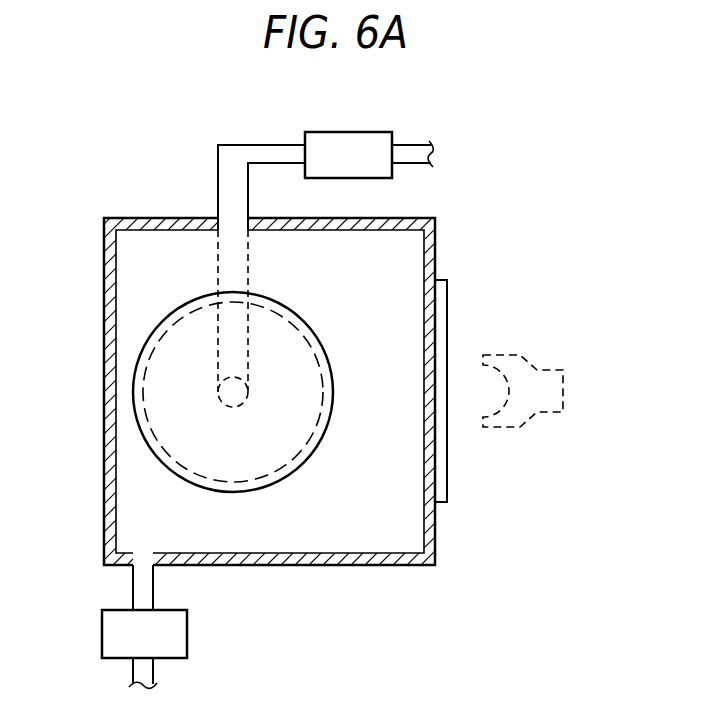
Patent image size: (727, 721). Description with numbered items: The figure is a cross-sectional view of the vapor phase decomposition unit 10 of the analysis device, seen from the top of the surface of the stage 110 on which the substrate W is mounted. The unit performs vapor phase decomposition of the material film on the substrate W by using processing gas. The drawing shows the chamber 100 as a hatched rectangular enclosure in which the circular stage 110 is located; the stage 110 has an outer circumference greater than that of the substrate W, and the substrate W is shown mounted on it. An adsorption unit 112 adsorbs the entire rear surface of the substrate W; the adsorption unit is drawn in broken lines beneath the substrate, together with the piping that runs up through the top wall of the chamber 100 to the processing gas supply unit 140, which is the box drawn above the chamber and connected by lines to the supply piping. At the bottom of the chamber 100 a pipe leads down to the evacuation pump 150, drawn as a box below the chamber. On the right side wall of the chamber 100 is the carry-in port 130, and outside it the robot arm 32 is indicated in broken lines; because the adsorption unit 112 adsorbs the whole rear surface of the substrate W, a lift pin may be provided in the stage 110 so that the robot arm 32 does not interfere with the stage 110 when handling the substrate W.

The vapor phase decomposition unit 10 is at (486, 232).
The chamber 100 is at (435, 535).
The stage 110 is at (190, 296).
The adsorption unit 112 is at (233, 392).
The carry-in port 130 is at (447, 312).
The processing gas supply unit 140 is at (350, 132).
The evacuation pump 150 is at (187, 632).
The robot arm 32 is at (563, 390).
The substrate W is at (143, 400).